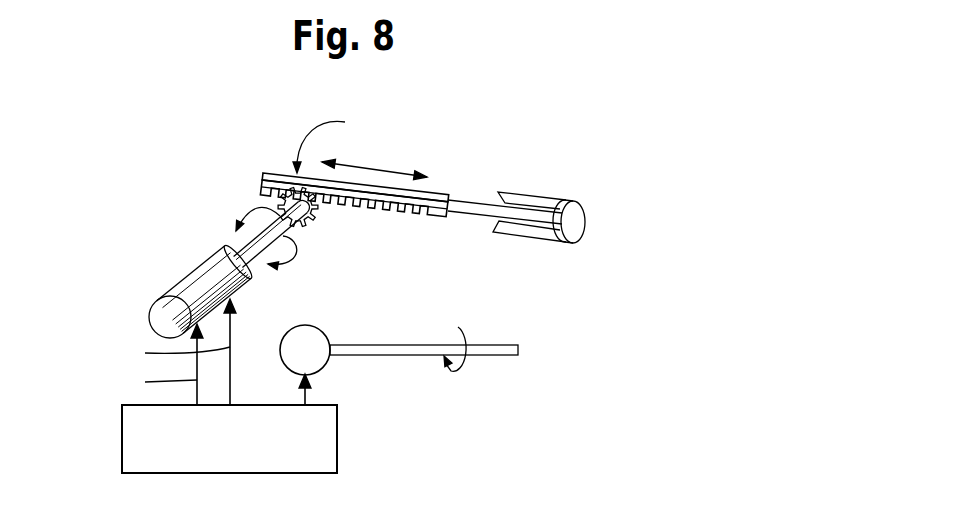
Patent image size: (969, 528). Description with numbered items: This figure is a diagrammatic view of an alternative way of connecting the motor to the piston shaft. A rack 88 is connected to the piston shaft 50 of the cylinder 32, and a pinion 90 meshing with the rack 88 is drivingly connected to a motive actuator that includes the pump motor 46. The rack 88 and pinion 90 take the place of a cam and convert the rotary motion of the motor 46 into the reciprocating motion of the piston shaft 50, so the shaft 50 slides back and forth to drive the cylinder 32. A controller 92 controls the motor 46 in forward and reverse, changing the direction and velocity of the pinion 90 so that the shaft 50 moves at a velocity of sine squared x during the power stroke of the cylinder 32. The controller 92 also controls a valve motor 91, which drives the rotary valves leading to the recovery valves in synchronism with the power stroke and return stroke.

The rack 88 is at (273, 173).
The pinion 90 is at (320, 207).
The piston shaft 50 is at (477, 218).
The cylinder 32 is at (563, 203).
The motor 46 is at (163, 291).
The controller 92 is at (122, 425).
The valve motor 91 is at (323, 367).